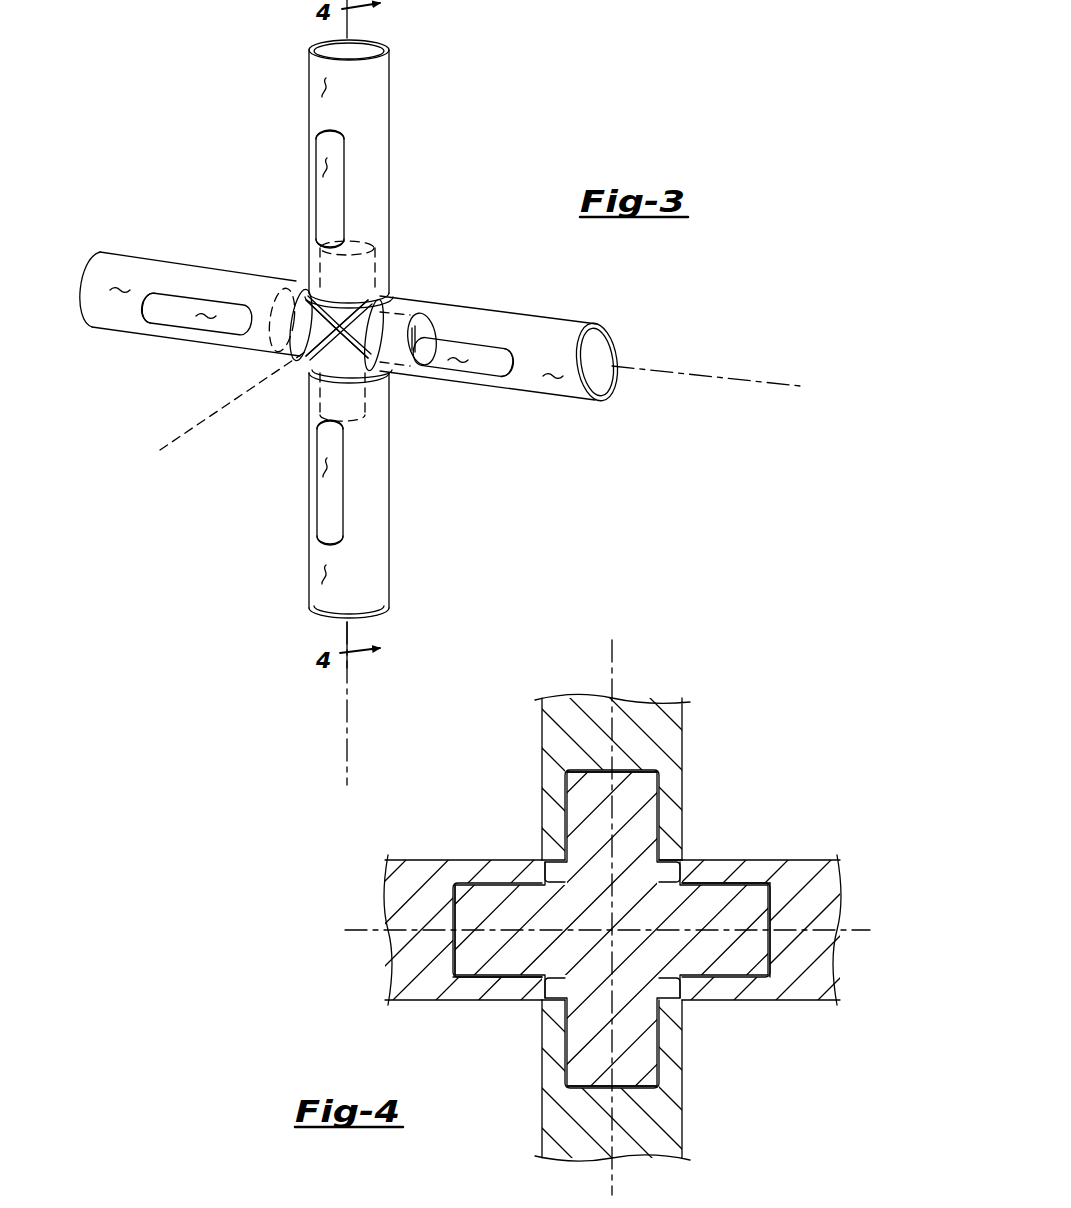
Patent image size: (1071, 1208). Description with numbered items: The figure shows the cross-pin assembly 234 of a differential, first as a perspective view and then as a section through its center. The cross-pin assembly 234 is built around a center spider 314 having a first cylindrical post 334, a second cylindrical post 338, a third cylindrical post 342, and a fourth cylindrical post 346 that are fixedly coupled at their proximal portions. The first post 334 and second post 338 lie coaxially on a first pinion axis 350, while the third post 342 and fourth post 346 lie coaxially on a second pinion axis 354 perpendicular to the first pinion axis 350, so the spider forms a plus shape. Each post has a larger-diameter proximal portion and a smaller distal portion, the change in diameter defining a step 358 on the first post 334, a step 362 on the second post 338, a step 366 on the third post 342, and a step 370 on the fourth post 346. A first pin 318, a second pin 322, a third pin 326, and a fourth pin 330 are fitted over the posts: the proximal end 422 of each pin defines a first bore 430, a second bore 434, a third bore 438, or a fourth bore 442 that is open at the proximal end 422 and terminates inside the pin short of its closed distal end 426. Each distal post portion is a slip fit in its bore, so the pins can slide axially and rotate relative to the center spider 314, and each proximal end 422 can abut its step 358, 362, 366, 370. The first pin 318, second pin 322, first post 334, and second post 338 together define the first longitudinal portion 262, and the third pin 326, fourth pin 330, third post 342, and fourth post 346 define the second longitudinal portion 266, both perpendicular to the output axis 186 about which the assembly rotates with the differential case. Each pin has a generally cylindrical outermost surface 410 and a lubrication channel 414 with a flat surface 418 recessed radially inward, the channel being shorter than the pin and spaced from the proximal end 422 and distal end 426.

In FIG. 3, the output axis 186 is at (175, 445).
In FIG. 3, the cross-pin assembly 234 is at (190, 152).
In FIG. 3, the first longitudinal portion 262 is at (383, 44).
In FIG. 3, the second longitudinal portion 266 is at (107, 250).
In FIG. 3, the center spider 314 is at (340, 368).
In FIG. 4, the center spider 314 is at (690, 912).
In FIG. 3, the first pin 318 is at (390, 102).
In FIG. 4, the first pin 318 is at (656, 700).
In FIG. 3, the second pin 322 is at (310, 543).
In FIG. 4, the second pin 322 is at (660, 1150).
In FIG. 3, the third pin 326 is at (130, 335).
In FIG. 4, the third pin 326 is at (415, 880).
In FIG. 3, the fourth pin 330 is at (592, 320).
In FIG. 4, the fourth pin 330 is at (823, 1000).
In FIG. 3, the first cylindrical post 334 is at (366, 240).
In FIG. 4, the first cylindrical post 334 is at (645, 815).
In FIG. 3, the second cylindrical post 338 is at (365, 396).
In FIG. 4, the second cylindrical post 338 is at (640, 1084).
In FIG. 3, the third cylindrical post 342 is at (268, 302).
In FIG. 4, the third cylindrical post 342 is at (470, 895).
In FIG. 3, the fourth cylindrical post 346 is at (440, 330).
In FIG. 4, the fourth cylindrical post 346 is at (745, 965).
In FIG. 3, the first pinion axis 350 is at (340, 752).
In FIG. 4, the first pinion axis 350 is at (605, 645).
In FIG. 3, the second pinion axis 354 is at (770, 385).
In FIG. 4, the second pinion axis 354 is at (345, 930).
In FIG. 4, the step 358 is at (665, 860).
In FIG. 4, the step 362 is at (560, 1035).
In FIG. 4, the step 366 is at (542, 995).
In FIG. 4, the step 370 is at (692, 877).
In FIG. 3, the outermost surface 410 is at (318, 92).
In FIG. 3, the lubrication channel 414 is at (322, 145).
In FIG. 3, the flat surface 418 is at (318, 172).
In FIG. 3, the proximal end 422 is at (380, 302).
In FIG. 4, the proximal end 422 is at (545, 865).
In FIG. 3, the distal end 426 is at (313, 50).
In FIG. 4, the first bore 430 is at (592, 768).
In FIG. 4, the second bore 434 is at (585, 1095).
In FIG. 4, the third bore 438 is at (440, 935).
In FIG. 4, the fourth bore 442 is at (778, 897).